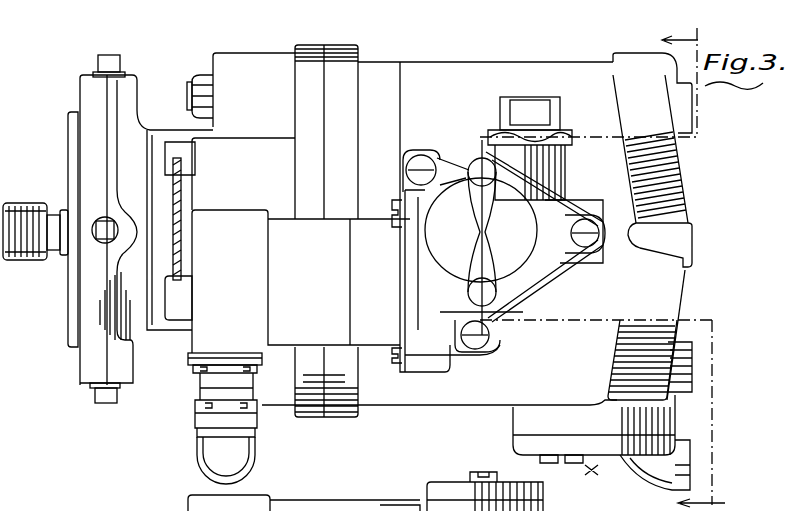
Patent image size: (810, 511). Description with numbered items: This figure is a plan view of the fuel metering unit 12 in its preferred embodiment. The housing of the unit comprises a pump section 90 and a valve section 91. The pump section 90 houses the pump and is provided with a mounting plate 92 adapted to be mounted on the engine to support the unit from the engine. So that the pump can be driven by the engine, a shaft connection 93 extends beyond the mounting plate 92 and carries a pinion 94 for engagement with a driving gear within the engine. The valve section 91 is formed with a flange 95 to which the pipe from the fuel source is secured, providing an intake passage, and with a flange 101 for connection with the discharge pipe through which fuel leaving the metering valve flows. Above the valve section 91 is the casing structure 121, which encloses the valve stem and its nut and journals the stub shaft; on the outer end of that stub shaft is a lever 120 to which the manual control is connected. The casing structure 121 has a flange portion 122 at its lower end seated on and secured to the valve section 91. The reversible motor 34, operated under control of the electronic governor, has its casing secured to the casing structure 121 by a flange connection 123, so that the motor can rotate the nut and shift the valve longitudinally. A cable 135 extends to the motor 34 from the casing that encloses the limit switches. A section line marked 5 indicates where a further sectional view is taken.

The section line 5 is at (693, 261).
The unit 12 is at (394, 421).
The reversible motor 34 is at (282, 218).
The pump section 90 is at (228, 60).
The valve section 91 is at (405, 72).
The mounting plate 92 is at (90, 367).
The shaft connection 93 is at (60, 250).
The pinion 94 is at (25, 205).
The flange 95 is at (655, 293).
The flange 101 is at (660, 185).
The lever 120 is at (525, 112).
The casing structure 121 is at (520, 252).
The flange portion 122 is at (448, 152).
The flange connection 123 is at (412, 358).
The cable 135 is at (213, 456).